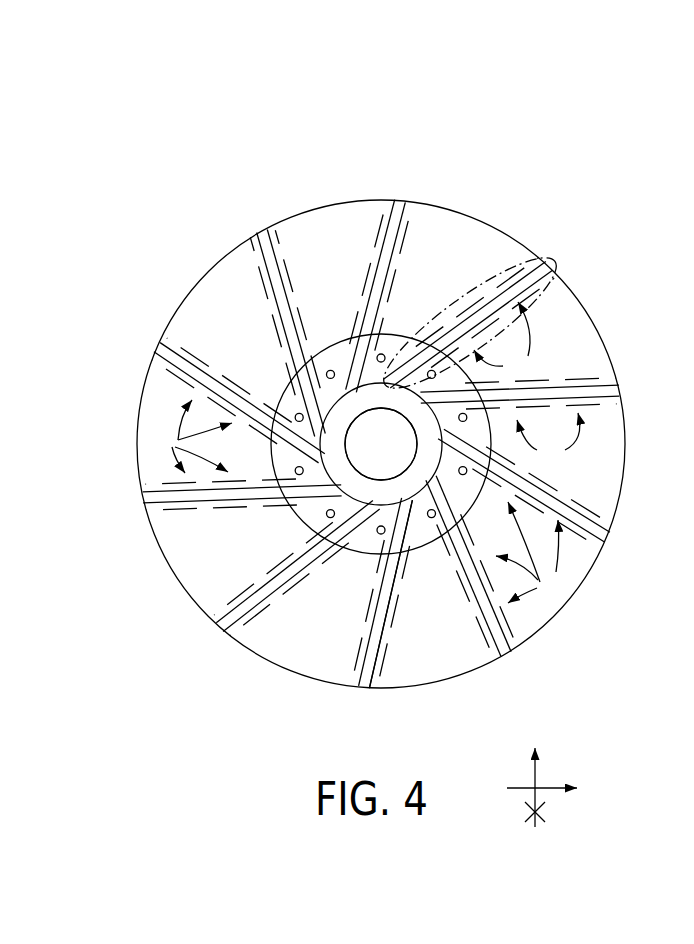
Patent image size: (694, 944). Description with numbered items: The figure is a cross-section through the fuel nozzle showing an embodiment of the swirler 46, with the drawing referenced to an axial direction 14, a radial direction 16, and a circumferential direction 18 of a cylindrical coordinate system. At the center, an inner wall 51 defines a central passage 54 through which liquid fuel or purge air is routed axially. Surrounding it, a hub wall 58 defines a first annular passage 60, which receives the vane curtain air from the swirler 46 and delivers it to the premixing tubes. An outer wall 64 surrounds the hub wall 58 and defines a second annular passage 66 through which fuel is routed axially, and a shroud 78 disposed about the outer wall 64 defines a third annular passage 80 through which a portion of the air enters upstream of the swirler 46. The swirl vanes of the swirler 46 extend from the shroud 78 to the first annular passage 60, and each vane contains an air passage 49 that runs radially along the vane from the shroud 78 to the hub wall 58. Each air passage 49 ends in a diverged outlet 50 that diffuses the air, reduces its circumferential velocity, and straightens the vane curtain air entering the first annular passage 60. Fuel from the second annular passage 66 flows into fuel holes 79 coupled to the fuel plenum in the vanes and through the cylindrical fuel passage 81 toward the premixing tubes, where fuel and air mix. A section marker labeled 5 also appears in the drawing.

The swirler 46 is at (318, 128).
The shroud 78 is at (464, 210).
The third annular passage 80 is at (307, 256).
The air passage 49 is at (377, 253).
The second annular passage 66 is at (366, 384).
The diverged air outlet 50 is at (333, 360).
The first annular passage 60 is at (340, 409).
The central passage 54 is at (368, 455).
The inner wall 51 is at (400, 477).
The hub wall 58 is at (490, 473).
The outer wall 64 is at (293, 551).
The cylindrical fuel passage 81 is at (397, 540).
The fuel hole 79 is at (362, 452).
The section line 5 is at (553, 270).
The axial direction 14 is at (537, 825).
The radial direction 16 is at (530, 773).
The circumferential direction 18 is at (552, 785).